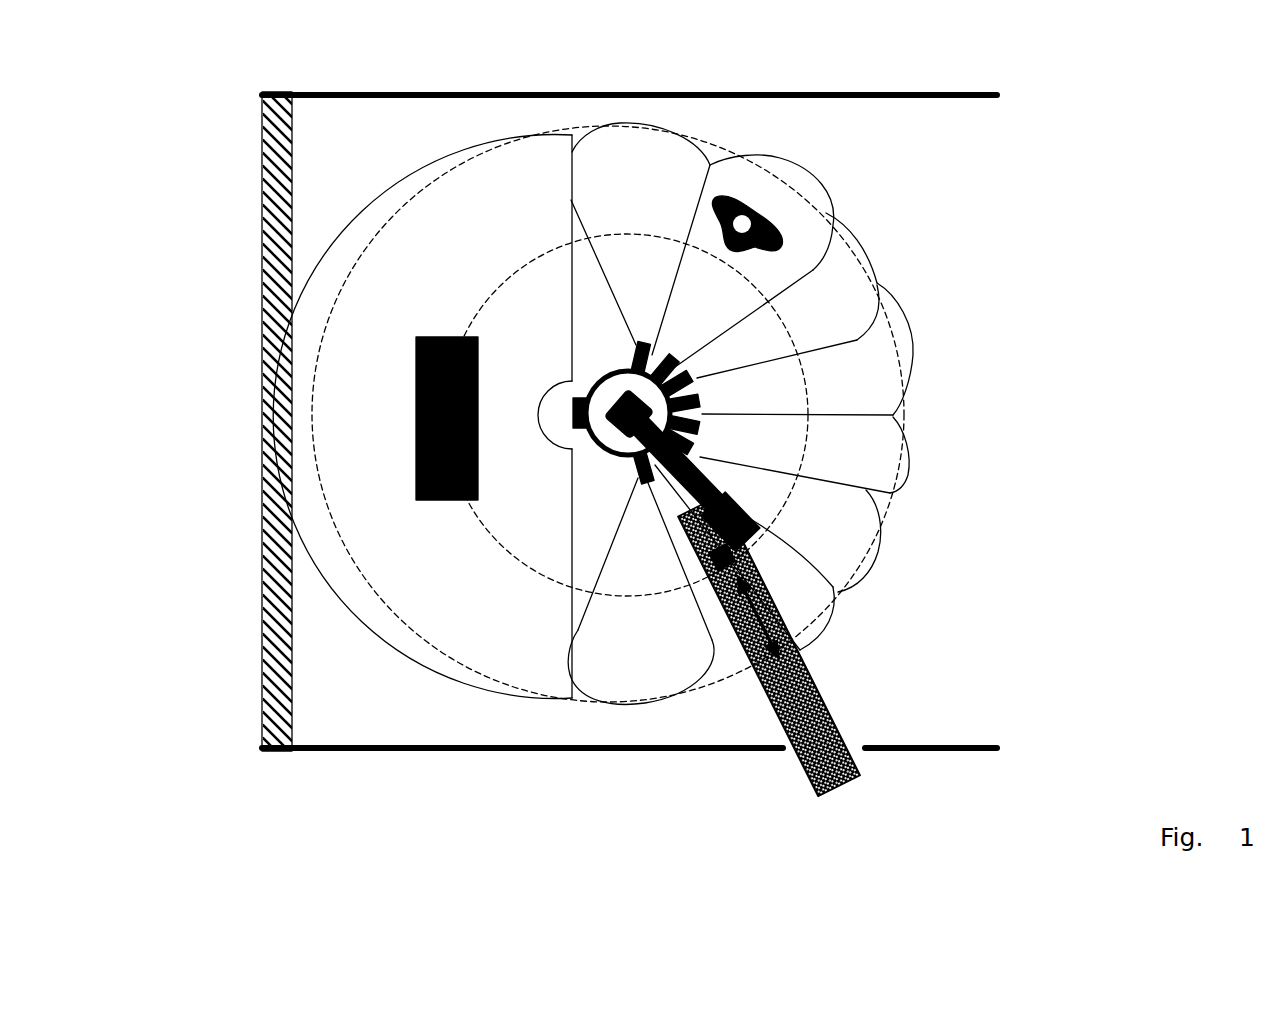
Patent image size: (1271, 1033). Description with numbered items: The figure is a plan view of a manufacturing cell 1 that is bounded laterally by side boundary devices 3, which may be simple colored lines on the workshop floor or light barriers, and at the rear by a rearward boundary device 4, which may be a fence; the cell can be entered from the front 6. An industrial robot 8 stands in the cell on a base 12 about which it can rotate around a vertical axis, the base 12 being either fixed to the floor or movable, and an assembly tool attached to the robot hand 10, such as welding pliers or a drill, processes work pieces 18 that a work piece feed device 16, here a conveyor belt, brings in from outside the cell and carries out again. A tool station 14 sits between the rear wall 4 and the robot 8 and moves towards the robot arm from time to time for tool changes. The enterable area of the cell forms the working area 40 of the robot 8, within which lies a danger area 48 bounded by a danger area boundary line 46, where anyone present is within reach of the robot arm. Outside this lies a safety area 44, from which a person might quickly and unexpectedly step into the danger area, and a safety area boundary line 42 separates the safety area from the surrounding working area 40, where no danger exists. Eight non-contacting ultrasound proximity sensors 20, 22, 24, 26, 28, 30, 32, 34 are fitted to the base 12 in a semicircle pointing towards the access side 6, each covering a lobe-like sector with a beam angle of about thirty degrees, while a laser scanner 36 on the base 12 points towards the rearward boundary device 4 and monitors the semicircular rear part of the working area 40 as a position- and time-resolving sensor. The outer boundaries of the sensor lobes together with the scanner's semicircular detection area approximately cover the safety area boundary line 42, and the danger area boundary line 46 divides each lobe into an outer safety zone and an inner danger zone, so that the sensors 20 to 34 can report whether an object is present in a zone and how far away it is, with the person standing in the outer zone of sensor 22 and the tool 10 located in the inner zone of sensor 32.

The manufacturing cell 1 is at (1060, 75).
The side boundary devices 3 is at (452, 96).
The rearward boundary device 4 is at (262, 453).
The front 6 is at (987, 157).
The industrial robot 8 is at (613, 392).
The tool 10 is at (750, 515).
The base 12 is at (585, 400).
The tool station 14 is at (423, 503).
The work piece feed device 16 is at (827, 737).
The work pieces 18 is at (753, 568).
The proximity sensor 20 is at (635, 350).
The proximity sensor 22 is at (670, 355).
The proximity sensor 24 is at (700, 377).
The proximity sensor 26 is at (705, 400).
The proximity sensor 28 is at (703, 428).
The proximity sensor 30 is at (693, 453).
The proximity sensor 32 is at (648, 483).
The proximity sensor 34 is at (635, 470).
The laser scanner 36 is at (573, 397).
The working area 40 is at (928, 136).
The safety area boundary line 42 is at (905, 413).
The safety area 44 is at (520, 175).
The danger area boundary line 46 is at (485, 530).
The danger area 48 is at (530, 533).